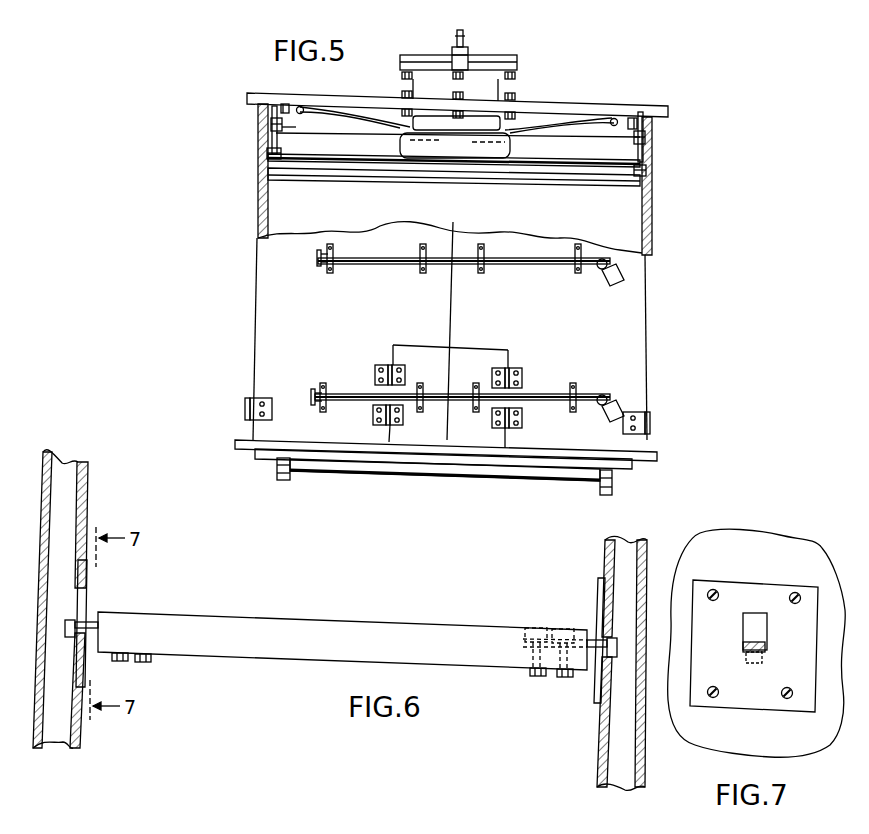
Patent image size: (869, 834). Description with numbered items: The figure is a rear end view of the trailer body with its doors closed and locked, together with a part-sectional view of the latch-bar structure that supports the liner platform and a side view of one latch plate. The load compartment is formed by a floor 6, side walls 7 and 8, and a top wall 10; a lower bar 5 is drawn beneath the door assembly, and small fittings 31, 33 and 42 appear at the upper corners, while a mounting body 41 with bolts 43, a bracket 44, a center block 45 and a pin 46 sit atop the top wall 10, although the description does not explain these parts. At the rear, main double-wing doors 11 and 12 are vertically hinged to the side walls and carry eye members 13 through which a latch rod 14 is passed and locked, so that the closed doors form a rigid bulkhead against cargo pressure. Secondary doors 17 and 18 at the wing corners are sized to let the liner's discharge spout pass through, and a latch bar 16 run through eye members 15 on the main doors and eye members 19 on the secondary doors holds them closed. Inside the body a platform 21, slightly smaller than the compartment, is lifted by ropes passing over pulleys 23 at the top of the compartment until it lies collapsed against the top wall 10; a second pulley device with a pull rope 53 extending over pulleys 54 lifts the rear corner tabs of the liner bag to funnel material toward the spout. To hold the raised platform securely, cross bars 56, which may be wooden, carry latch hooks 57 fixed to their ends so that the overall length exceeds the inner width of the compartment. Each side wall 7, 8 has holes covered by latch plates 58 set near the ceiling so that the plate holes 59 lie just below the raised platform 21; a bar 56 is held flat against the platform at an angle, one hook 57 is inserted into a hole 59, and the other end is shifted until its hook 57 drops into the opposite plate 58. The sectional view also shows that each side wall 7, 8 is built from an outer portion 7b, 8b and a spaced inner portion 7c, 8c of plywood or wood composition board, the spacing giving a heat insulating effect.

In FIG. 5, the lower bar 5 is at (546, 482).
In FIG. 5, the floor 6 is at (435, 449).
In FIG. 5, the side wall 7 is at (258, 205).
In FIG. 6, the side wall 7 is at (90, 508).
In FIG. 6, the outer portion 7b is at (53, 462).
In FIG. 6, the inner portion 7c is at (88, 485).
In FIG. 7, the inner portion 7c is at (763, 540).
In FIG. 5, the side wall 8 is at (652, 215).
In FIG. 6, the side wall 8 is at (605, 567).
In FIG. 6, the outer portion 8b is at (652, 542).
In FIG. 6, the inner portion 8c is at (605, 543).
In FIG. 5, the top wall 10 is at (611, 108).
In FIG. 5, the main double-wing door 11 is at (260, 326).
In FIG. 5, the main double-wing door 12 is at (644, 317).
In FIG. 5, the eye member 13 is at (420, 266).
In FIG. 5, the latch rod 14 is at (545, 264).
In FIG. 5, the eye member 15 is at (326, 383).
In FIG. 5, the latch bar 16 is at (558, 402).
In FIG. 5, the secondary door 17 is at (410, 442).
In FIG. 5, the secondary door 18 is at (478, 446).
In FIG. 5, the eye member 19 is at (478, 382).
In FIG. 5, the platform 21 is at (342, 163).
In FIG. 5, the pulley 23 is at (270, 125).
In FIG. 5, the bolt 31 is at (636, 160).
In FIG. 5, the clip 33 is at (278, 106).
In FIG. 5, the mounting body 41 is at (498, 85).
In FIG. 5, the lower mounting block 42 is at (401, 98).
In FIG. 5, the bolts 43 is at (513, 73).
In FIG. 5, the mounting bracket 44 is at (518, 66).
In FIG. 5, the center block 45 is at (503, 56).
In FIG. 5, the pin 46 is at (465, 47).
In FIG. 5, the pull rope 53 is at (340, 108).
In FIG. 5, the pulley 54 is at (276, 152).
In FIG. 5, the cross bar 56 is at (386, 171).
In FIG. 6, the cross bar 56 is at (273, 653).
In FIG. 5, the latch hook 57 is at (267, 155).
In FIG. 6, the latch hook 57 is at (97, 618).
In FIG. 7, the latch hook 57 is at (742, 644).
In FIG. 6, the latch plate 58 is at (88, 587).
In FIG. 7, the latch plate 58 is at (728, 592).
In FIG. 6, the plate hole 59 is at (90, 597).
In FIG. 7, the plate hole 59 is at (758, 620).